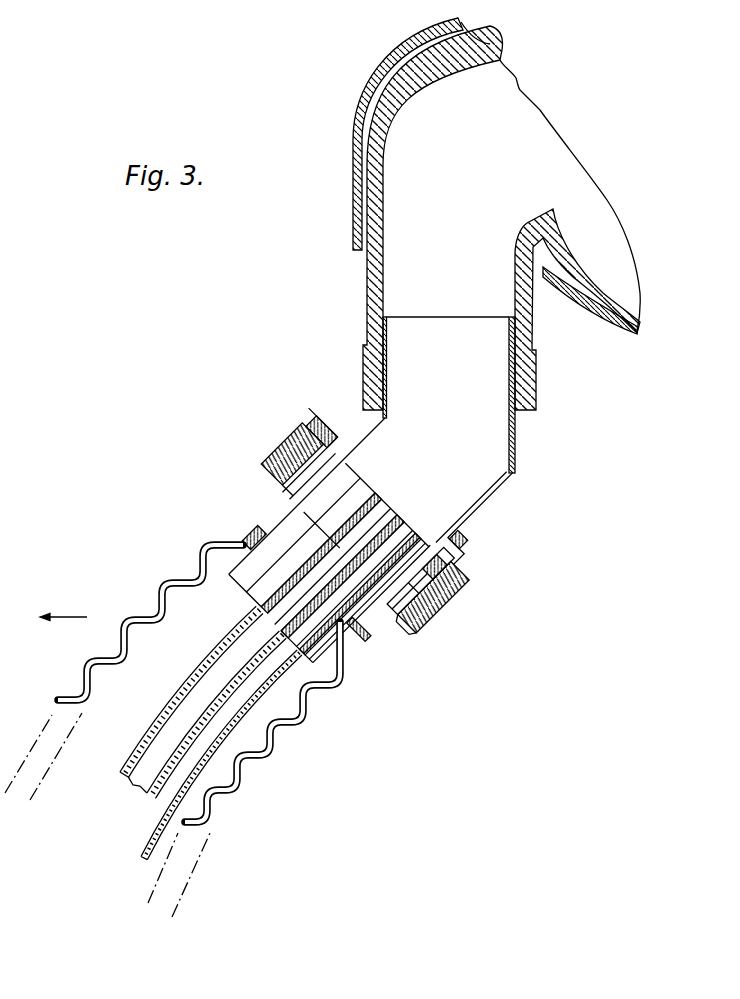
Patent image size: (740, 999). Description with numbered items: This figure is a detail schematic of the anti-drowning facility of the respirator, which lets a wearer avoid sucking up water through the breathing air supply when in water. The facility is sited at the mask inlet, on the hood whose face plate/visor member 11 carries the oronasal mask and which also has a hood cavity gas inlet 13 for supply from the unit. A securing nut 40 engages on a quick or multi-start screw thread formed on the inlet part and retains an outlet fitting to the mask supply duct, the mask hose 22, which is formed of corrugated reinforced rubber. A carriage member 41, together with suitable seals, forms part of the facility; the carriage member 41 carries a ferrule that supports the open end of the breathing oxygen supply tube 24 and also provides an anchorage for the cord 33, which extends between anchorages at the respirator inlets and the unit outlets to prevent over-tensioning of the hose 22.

The face plate/visor member 11 is at (345, 137).
The hood cavity gas inlet 13 is at (436, 313).
The mask supply duct (mask hose) 22 is at (318, 729).
The breathing oxygen supply tube 24 is at (186, 654).
The cord 33 is at (214, 769).
The securing nut 40 is at (456, 617).
The carriage member 41 is at (378, 478).